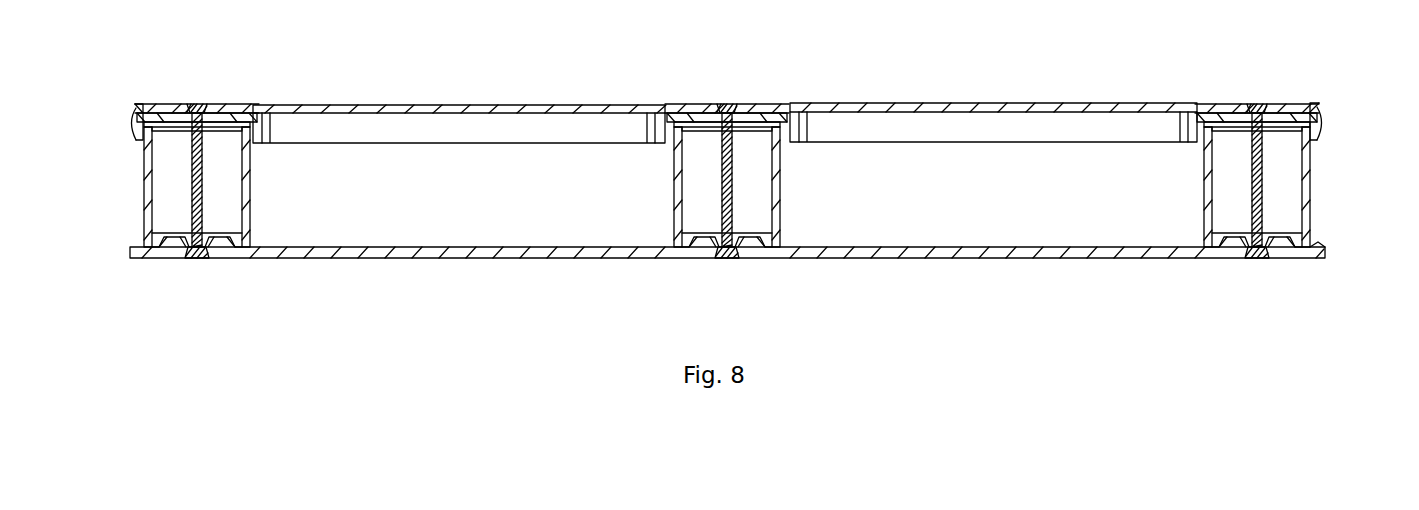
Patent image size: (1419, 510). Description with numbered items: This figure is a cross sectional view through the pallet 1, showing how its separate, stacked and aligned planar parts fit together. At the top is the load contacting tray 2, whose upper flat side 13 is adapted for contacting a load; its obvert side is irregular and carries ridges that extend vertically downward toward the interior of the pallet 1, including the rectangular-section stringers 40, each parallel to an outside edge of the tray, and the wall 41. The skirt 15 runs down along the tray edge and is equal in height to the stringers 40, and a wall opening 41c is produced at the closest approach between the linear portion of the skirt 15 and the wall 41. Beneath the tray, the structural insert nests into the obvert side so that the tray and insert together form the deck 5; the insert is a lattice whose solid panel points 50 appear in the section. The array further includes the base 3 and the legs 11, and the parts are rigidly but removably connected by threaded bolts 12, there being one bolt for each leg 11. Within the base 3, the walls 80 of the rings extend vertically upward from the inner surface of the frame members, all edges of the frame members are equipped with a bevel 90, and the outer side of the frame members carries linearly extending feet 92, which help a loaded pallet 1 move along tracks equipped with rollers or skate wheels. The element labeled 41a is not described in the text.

The pallet 1 is at (336, 98).
The load contacting tray 2 is at (1097, 102).
The base 3 is at (545, 259).
The deck 5 is at (181, 100).
The leg 11 is at (248, 197).
The threaded bolt 12 is at (190, 186).
The upper flat side 13 is at (397, 104).
The skirt 15 is at (130, 122).
The stringer 40 is at (472, 141).
The wall 41 is at (766, 111).
The frame upper flange 41a is at (252, 111).
The wall opening 41c is at (138, 103).
The solid panel point 50 is at (224, 128).
The wall of ring 80 is at (176, 248).
The bevel 90 is at (1325, 249).
The foot 92 is at (1005, 259).